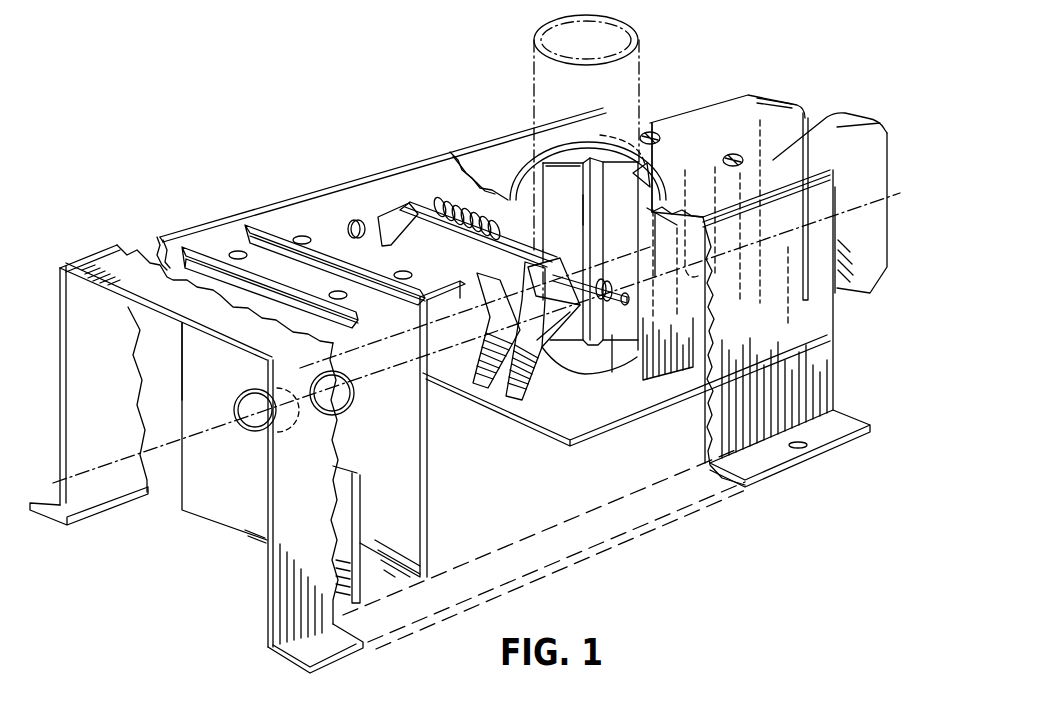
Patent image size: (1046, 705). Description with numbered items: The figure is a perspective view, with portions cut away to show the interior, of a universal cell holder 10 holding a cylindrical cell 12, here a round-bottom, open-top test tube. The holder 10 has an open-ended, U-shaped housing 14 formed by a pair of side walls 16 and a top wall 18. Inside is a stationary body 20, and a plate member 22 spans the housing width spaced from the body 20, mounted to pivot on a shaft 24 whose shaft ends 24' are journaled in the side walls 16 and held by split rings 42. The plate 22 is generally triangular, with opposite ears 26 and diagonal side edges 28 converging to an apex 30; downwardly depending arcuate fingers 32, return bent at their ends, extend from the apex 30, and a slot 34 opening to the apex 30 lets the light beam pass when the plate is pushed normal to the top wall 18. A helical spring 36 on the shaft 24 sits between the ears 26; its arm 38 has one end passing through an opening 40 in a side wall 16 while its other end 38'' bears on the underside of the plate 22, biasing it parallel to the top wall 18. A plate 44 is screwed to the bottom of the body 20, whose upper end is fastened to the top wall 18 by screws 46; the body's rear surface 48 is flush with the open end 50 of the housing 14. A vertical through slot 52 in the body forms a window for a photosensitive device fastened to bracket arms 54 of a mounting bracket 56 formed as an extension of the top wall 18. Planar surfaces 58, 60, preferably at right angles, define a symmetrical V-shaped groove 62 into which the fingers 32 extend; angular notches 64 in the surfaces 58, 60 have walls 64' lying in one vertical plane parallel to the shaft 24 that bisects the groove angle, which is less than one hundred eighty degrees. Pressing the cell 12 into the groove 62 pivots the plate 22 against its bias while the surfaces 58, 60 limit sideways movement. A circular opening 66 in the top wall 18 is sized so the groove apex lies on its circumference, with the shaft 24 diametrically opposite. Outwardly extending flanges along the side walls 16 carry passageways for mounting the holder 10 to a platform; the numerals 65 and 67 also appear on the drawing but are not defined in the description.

The universal cell holder 10 is at (385, 130).
The cell 12 is at (534, 46).
The housing 14 is at (335, 205).
The side walls 16 is at (70, 360).
The top wall 18 is at (178, 305).
The stationary body 20 is at (672, 362).
The plate member 22 is at (473, 320).
The shaft 24 is at (620, 274).
The shaft ends 24' is at (659, 309).
The ears 26 is at (388, 222).
The side edges 28 is at (487, 330).
The apex 30 is at (480, 407).
The fingers 32 is at (515, 403).
The slot 34 is at (497, 407).
The helical spring 36 is at (443, 222).
The spring arm 38 is at (291, 243).
The other end of spring arm 38'' is at (410, 429).
The opening 40 is at (363, 247).
The split rings 42 is at (612, 372).
The plate 44 is at (562, 423).
The screws 46 is at (730, 157).
The rear surface 48 is at (772, 292).
The open end 50 is at (833, 315).
The through slot 52 is at (700, 346).
The bracket arms 54 is at (863, 187).
The mounting bracket 56 is at (730, 110).
The planar surface 58 is at (553, 187).
The planar surface 60 is at (643, 193).
The V-shaped groove 62 is at (648, 173).
The notches 64 is at (562, 134).
The notch walls 64' is at (572, 223).
The plunger bore 65 is at (618, 140).
The circular opening 66 is at (513, 173).
The mounting flange 67 is at (830, 427).